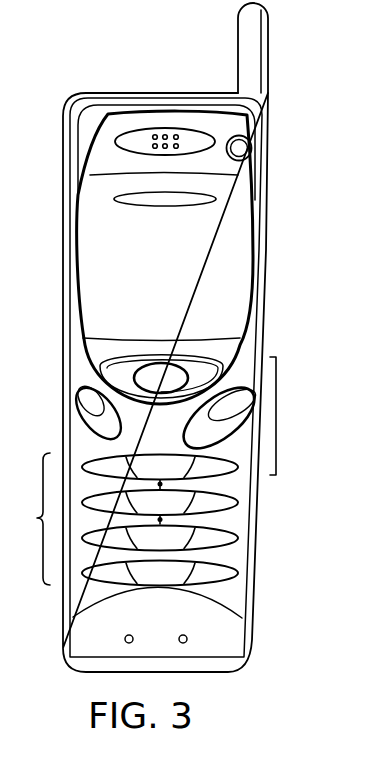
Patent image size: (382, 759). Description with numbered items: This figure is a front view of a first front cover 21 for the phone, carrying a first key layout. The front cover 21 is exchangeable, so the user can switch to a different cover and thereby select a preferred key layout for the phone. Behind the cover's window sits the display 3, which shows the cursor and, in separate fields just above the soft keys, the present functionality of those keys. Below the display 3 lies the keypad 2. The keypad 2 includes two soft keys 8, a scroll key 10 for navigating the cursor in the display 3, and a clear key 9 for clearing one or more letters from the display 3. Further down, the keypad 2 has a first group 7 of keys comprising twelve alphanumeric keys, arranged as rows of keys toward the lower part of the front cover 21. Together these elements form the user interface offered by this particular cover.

The front cover 21 is at (103, 95).
The display 3 is at (231, 310).
The soft keys 8 is at (177, 381).
The clear key 9 is at (98, 403).
The scroll key 10 is at (232, 418).
The first group of keys 7 is at (127, 519).
The keypad 2 is at (276, 472).